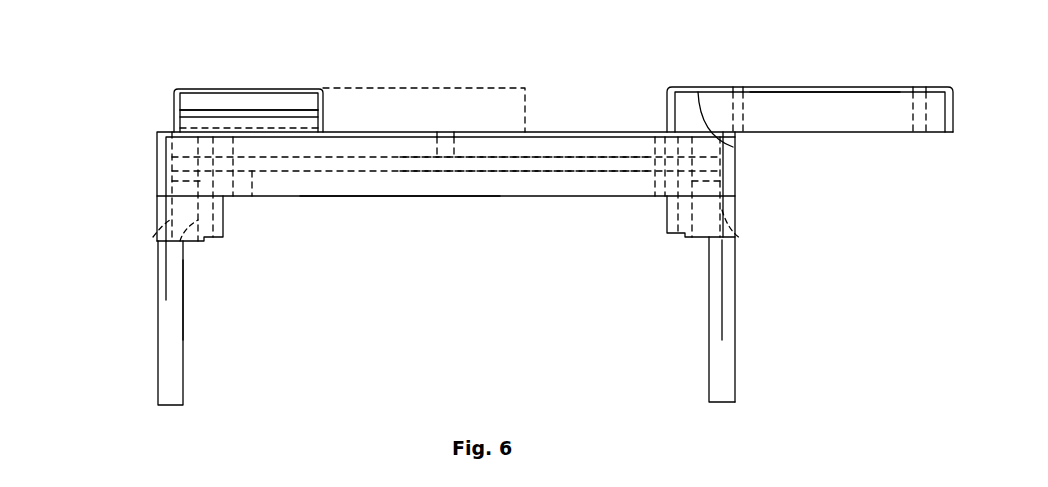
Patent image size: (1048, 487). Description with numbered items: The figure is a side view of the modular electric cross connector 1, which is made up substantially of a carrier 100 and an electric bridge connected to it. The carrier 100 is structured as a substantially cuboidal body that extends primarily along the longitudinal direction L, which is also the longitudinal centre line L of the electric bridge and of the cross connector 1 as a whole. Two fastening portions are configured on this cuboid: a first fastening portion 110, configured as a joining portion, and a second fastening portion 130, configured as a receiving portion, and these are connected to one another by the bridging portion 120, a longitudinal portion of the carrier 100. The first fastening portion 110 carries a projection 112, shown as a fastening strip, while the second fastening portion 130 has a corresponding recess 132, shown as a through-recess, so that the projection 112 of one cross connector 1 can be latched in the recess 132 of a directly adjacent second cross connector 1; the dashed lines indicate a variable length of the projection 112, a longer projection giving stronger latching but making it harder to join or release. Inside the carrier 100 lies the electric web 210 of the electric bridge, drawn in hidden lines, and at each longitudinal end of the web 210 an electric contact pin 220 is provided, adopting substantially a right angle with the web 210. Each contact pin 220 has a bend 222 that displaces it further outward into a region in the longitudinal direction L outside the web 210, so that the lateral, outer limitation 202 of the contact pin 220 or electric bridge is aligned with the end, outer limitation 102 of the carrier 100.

The modular electric cross connector 1 is at (150, 66).
The carrier 100 is at (157, 132).
The lateral, outer limitation of the carrier 102 is at (157, 147).
The first fastening portion 110 is at (255, 128).
The projection 112 is at (250, 100).
The bridging portion 120 is at (398, 185).
The second fastening portion 130 is at (934, 87).
The recess 132 is at (805, 112).
The lateral, outer limitation of the electric bridge 202 is at (158, 360).
The electric web 210 is at (545, 160).
The electric contact pin 220 is at (183, 330).
The bend 222 is at (153, 237).
The longitudinal centre line L is at (157, 162).